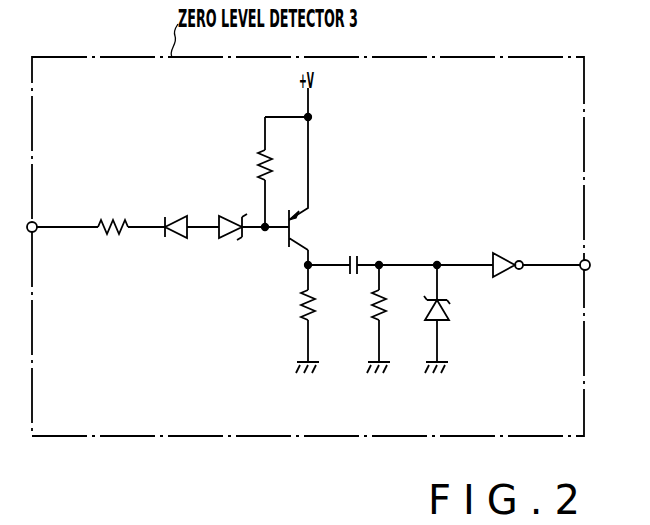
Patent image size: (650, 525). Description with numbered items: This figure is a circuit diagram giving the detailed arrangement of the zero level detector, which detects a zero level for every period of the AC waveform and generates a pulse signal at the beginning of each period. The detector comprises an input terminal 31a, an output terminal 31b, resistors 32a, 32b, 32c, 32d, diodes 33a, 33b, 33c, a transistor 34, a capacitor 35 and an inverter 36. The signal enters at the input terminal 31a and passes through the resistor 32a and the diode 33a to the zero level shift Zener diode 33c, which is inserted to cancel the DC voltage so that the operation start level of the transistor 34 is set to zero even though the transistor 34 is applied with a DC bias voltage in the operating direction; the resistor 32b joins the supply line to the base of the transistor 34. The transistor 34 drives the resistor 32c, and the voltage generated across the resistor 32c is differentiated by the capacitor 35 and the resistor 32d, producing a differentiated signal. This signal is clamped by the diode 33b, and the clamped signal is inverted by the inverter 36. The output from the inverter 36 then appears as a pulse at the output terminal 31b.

The input terminal 31a is at (37, 222).
The output terminal 31b is at (590, 260).
The resistor 32a is at (109, 235).
The resistor 32b is at (256, 170).
The resistor 32c is at (314, 306).
The resistor 32d is at (385, 306).
The diode 33a is at (176, 240).
The diode 33b is at (447, 308).
The zero level shift Zener diode 33c is at (231, 238).
The transistor 34 is at (300, 225).
The capacitor 35 is at (362, 258).
The inverter 36 is at (504, 253).